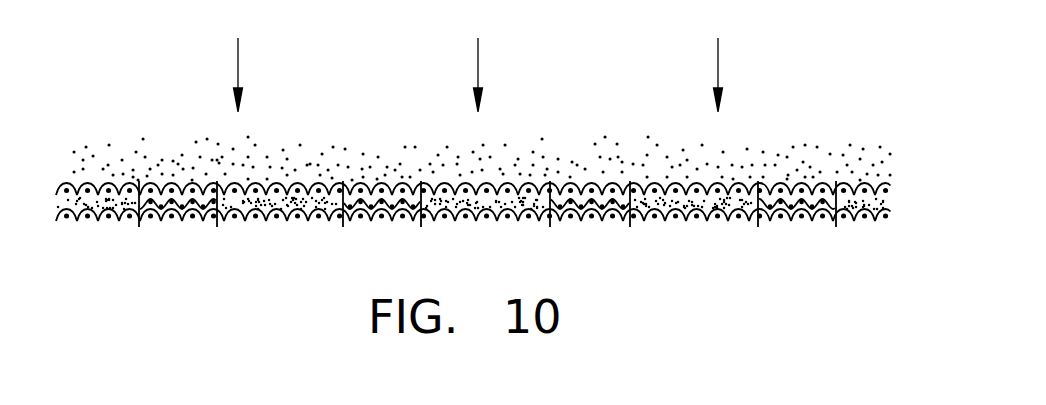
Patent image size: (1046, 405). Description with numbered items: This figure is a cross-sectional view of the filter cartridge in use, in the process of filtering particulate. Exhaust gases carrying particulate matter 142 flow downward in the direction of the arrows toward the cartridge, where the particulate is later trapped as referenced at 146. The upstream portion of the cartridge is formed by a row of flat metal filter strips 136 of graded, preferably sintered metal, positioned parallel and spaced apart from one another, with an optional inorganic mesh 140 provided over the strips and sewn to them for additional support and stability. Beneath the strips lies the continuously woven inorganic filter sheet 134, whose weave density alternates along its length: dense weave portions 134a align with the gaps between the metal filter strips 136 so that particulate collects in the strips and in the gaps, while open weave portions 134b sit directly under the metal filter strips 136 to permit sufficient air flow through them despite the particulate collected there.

The inorganic filter sheet 134 is at (482, 206).
The dense weave portions 134a is at (673, 221).
The open weave portions 134b is at (788, 221).
The metal filter strips 136 is at (601, 188).
The inorganic mesh 140 is at (891, 184).
The particulate matter 142 is at (733, 158).
The trapped particulate 146 is at (452, 206).